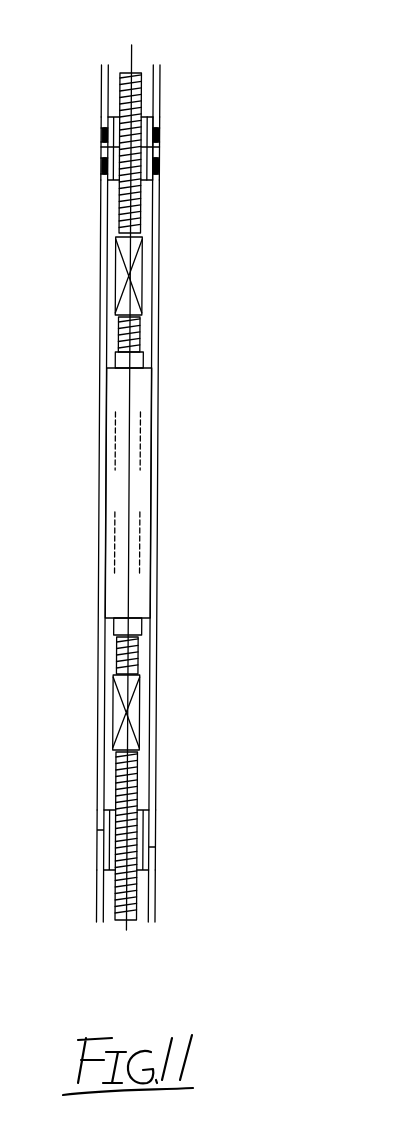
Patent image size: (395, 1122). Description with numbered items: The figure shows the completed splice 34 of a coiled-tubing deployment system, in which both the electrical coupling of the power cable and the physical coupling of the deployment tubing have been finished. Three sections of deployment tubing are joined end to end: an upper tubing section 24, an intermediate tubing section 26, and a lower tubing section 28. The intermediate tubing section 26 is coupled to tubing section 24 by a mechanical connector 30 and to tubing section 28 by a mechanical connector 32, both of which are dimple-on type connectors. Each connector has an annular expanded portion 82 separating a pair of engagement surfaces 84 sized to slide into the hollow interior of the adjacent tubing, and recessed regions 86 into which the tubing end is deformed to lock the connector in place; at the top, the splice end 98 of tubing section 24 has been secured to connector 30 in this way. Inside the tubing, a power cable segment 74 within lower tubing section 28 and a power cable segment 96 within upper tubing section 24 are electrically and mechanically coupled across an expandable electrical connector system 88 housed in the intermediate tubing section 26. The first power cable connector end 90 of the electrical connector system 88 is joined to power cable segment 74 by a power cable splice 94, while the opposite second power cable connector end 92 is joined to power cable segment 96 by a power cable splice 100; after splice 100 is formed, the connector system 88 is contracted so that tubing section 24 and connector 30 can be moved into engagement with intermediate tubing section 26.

The deployment tubing section 24 is at (163, 92).
The intermediate tubing section 26 is at (157, 600).
The lower tubing section 28 is at (155, 895).
The mechanical connector 30 is at (166, 142).
The mechanical connector 32 is at (161, 836).
The splice 34 is at (240, 260).
The power cable segment 74 is at (137, 770).
The annular expanded portion 82 is at (100, 147).
The engagement surfaces 84 is at (103, 130).
The recessed regions 86 is at (100, 132).
The electrical connector system 88 is at (158, 462).
The first power cable connector end 90 is at (137, 650).
The second power cable connector end 92 is at (140, 330).
The power cable splice 94 is at (135, 712).
The power cable segment 96 is at (143, 210).
The splice end 98 is at (163, 130).
The power cable splice 100 is at (135, 283).